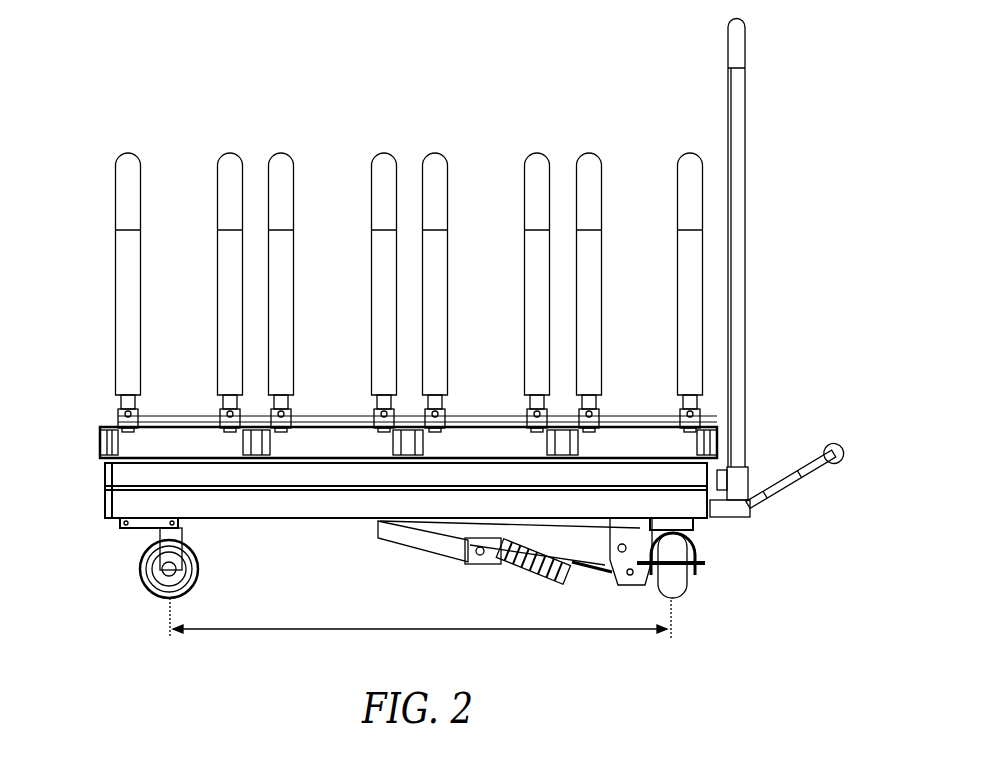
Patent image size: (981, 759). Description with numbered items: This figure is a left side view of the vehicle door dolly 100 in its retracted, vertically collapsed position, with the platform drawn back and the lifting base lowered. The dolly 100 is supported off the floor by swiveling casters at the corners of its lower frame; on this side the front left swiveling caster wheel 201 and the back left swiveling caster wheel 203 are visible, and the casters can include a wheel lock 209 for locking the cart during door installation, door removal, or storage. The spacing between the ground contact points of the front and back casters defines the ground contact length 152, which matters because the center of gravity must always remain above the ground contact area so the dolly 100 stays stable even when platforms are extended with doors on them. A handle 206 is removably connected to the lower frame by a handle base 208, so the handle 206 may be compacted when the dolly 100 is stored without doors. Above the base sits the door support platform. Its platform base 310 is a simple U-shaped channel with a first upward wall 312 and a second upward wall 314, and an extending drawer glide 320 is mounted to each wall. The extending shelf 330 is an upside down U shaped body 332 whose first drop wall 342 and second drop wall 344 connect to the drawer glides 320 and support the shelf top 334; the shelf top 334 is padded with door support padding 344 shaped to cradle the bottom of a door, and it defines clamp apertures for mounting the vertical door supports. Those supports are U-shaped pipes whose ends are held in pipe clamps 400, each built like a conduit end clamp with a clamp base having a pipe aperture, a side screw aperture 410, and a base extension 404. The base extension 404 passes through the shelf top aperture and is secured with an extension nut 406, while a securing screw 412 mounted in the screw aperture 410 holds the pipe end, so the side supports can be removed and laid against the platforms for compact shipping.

The vehicle door dolly 100 is at (622, 57).
The ground contact length 152 is at (418, 630).
The front left swiveling caster wheel 201 is at (152, 585).
The back left swiveling caster wheel 203 is at (688, 585).
The handle 206 is at (746, 112).
The handle base 208 is at (768, 455).
The wheel lock 209 is at (190, 540).
The platform base 310 is at (215, 455).
The first upward wall 312 is at (110, 478).
The second upward wall 314 is at (217, 462).
The extending drawer glide 320 is at (118, 432).
The extending shelf 330 is at (228, 446).
The upside down U shaped body 332 is at (234, 440).
The shelf top 334 is at (190, 420).
The first drop wall 342 is at (152, 445).
The second drop wall 344 is at (168, 420).
The pipe clamp 400 is at (442, 412).
The base extension 404 is at (436, 432).
The extension nut 406 is at (440, 430).
The side screw aperture 410 is at (442, 414).
The securing screw 412 is at (426, 413).